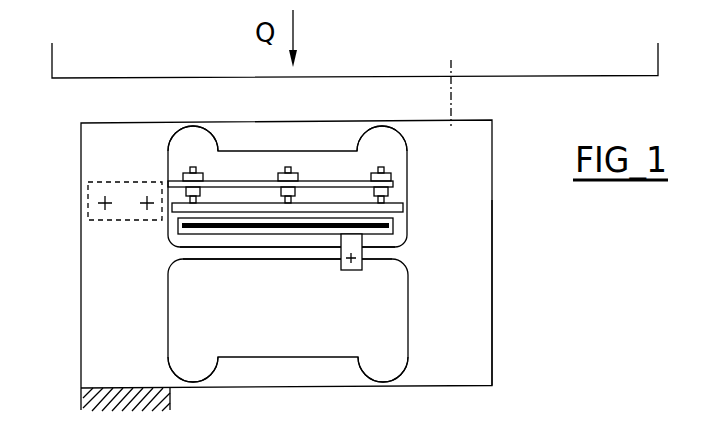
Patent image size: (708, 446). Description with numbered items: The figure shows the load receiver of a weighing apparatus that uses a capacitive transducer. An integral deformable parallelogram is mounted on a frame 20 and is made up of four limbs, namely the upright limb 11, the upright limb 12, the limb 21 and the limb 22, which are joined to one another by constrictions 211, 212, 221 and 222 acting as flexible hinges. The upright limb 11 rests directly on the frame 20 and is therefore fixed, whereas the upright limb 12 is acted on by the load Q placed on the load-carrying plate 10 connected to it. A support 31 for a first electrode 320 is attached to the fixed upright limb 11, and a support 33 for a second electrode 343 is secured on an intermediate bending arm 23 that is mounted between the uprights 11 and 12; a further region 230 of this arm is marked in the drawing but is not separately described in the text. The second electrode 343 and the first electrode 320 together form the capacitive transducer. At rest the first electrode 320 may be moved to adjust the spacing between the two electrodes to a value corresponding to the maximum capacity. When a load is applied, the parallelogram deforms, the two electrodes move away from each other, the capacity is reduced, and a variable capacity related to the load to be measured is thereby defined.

The load-carrying plate 10 is at (358, 72).
The upright limb 11 is at (105, 256).
The upright limb 12 is at (470, 312).
The frame 20 is at (112, 400).
The limb 21 is at (284, 137).
The constriction 211 is at (192, 125).
The constriction 212 is at (379, 125).
The limb 22 is at (292, 372).
The constriction 221 is at (195, 383).
The constriction 222 is at (383, 385).
The intermediate bending arm 23 is at (228, 252).
The web portion 230 is at (383, 256).
The support of the first electrode 31 is at (118, 182).
The first electrode 320 is at (397, 210).
The support of the second electrode 33 is at (340, 255).
The second electrode 343 is at (390, 220).